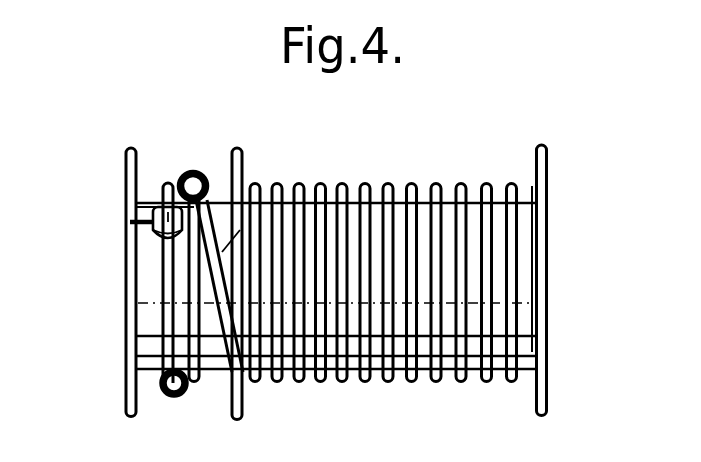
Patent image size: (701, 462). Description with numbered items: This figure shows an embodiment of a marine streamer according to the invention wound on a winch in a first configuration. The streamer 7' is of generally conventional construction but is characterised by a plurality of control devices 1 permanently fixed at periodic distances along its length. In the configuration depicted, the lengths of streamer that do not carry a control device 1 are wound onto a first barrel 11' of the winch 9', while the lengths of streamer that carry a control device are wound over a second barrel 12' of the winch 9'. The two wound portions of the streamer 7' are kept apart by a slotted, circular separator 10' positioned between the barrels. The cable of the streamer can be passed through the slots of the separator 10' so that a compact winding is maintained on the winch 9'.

The control device 1 is at (131, 222).
The streamer 7' is at (353, 248).
The winch 9' is at (95, 282).
The slotted, circular separator 10' is at (243, 254).
The first barrel 11' is at (434, 282).
The second barrel 12' is at (290, 286).